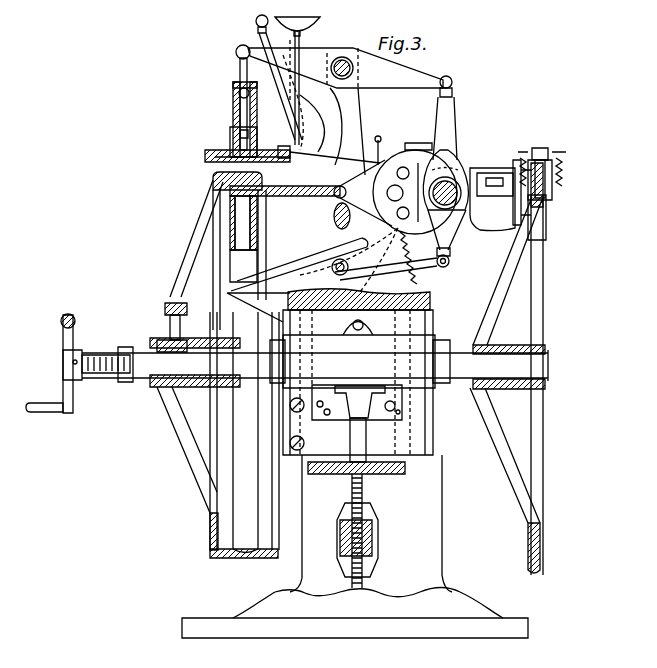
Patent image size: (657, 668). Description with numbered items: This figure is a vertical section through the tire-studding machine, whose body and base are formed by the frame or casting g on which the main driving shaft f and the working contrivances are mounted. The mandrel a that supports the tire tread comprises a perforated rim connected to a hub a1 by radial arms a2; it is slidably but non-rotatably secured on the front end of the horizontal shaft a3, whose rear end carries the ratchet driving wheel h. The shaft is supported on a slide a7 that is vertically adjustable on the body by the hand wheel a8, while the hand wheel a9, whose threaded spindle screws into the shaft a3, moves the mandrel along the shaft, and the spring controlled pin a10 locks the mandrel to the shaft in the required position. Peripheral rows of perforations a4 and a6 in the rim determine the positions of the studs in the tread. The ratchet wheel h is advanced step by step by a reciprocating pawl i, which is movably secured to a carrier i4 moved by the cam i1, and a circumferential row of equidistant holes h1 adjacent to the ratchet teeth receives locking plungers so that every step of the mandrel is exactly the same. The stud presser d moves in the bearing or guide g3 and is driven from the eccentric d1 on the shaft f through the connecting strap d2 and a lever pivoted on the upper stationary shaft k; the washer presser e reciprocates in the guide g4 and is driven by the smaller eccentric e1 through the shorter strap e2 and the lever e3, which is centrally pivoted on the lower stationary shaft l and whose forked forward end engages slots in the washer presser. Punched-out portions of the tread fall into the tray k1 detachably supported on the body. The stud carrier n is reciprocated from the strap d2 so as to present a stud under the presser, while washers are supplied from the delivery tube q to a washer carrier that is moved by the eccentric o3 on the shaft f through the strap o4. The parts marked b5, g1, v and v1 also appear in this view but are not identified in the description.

The mandrel a is at (216, 556).
The hub a1 is at (200, 388).
The radial arms a2 is at (215, 270).
The horizontal shaft a3 is at (145, 360).
The peripheral row of perforations a4 is at (238, 58).
The peripheral row of perforations a6 is at (283, 147).
The slide a7 is at (390, 412).
The hand wheel a8 is at (378, 480).
The hand wheel a9 is at (74, 322).
The spring controlled locking pin a10 is at (172, 305).
The guide bar b5 is at (245, 556).
The stud presser d is at (232, 135).
The eccentric d1 is at (490, 225).
The connecting strap d2 is at (456, 100).
The washer presser e is at (248, 231).
The eccentric e1 is at (458, 162).
The connecting strap e2 is at (452, 252).
The lever e3 is at (240, 280).
The main driving shaft f is at (455, 188).
The frame or casting g is at (447, 298).
The cup g1 is at (318, 20).
The bearing or guide g3 is at (233, 98).
The bearing or guide g4 is at (230, 202).
The ratchet driving wheel h is at (540, 290).
The holes in ratchet wheel h1 is at (541, 548).
The driving pawl i is at (547, 180).
The cam i1 is at (560, 165).
The carrier i4 is at (538, 148).
The upper stationary shaft k is at (347, 62).
The tray k1 is at (258, 306).
The lower stationary shaft l is at (335, 268).
The stud carrier n is at (225, 154).
The eccentric o3 is at (400, 150).
The strap o4 is at (378, 150).
The delivery tube q is at (301, 34).
The lever v is at (258, 29).
The rod v1 is at (415, 280).